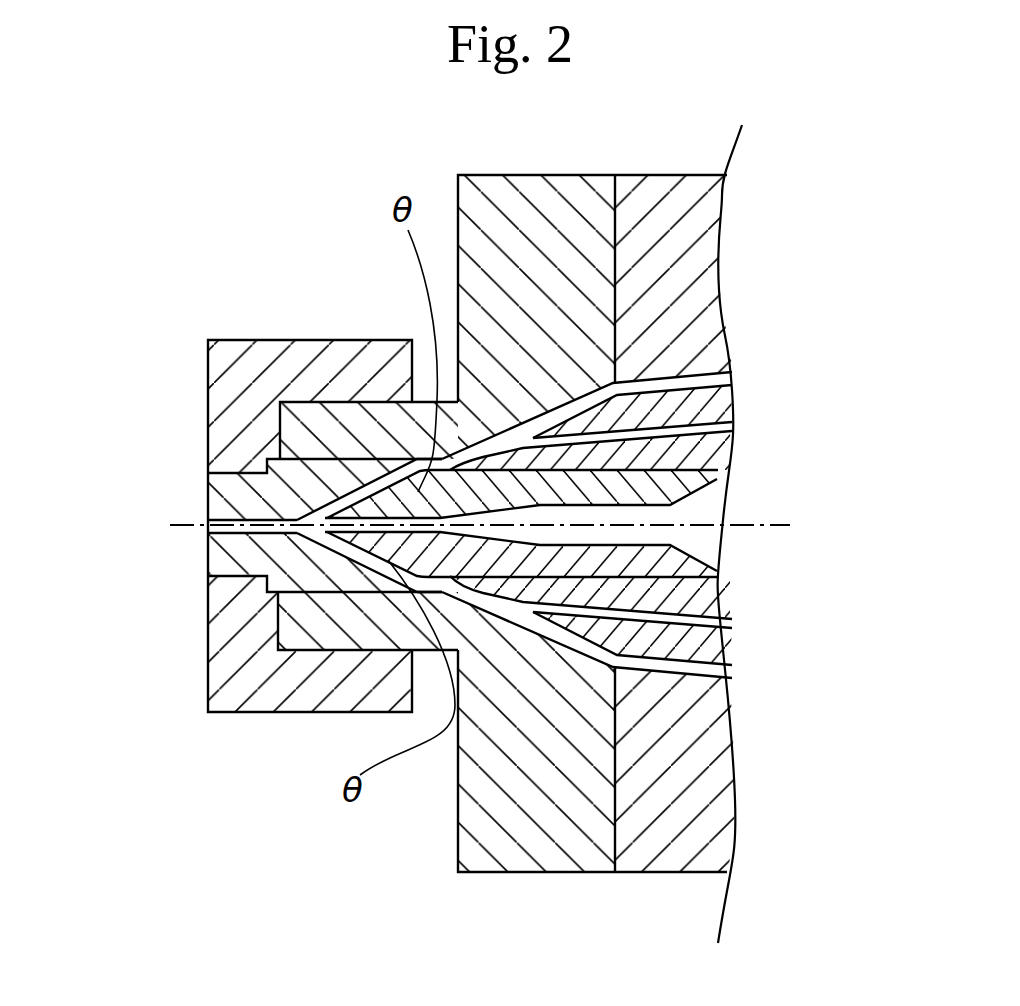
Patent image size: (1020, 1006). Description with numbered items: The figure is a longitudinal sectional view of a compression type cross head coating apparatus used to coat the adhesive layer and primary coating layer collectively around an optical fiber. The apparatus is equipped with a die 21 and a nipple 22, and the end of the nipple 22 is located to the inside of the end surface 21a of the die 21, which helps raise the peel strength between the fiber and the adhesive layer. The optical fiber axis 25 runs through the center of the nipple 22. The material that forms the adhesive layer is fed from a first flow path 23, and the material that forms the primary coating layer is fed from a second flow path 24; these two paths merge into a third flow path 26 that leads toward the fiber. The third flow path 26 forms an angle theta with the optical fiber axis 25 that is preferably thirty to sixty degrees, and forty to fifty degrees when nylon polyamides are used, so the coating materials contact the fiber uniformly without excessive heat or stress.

The die 21 is at (233, 495).
The end surface of die 21a is at (210, 536).
The nipple 22 is at (452, 563).
The first flow path 23 is at (727, 427).
The second flow path 24 is at (727, 378).
The optical fiber axis 25 is at (680, 525).
The third flow path 26 is at (388, 490).